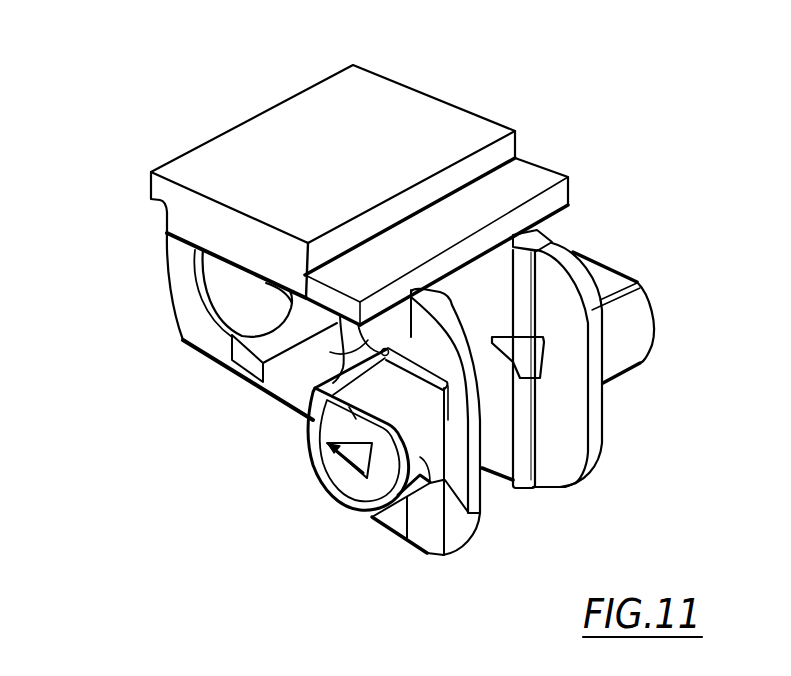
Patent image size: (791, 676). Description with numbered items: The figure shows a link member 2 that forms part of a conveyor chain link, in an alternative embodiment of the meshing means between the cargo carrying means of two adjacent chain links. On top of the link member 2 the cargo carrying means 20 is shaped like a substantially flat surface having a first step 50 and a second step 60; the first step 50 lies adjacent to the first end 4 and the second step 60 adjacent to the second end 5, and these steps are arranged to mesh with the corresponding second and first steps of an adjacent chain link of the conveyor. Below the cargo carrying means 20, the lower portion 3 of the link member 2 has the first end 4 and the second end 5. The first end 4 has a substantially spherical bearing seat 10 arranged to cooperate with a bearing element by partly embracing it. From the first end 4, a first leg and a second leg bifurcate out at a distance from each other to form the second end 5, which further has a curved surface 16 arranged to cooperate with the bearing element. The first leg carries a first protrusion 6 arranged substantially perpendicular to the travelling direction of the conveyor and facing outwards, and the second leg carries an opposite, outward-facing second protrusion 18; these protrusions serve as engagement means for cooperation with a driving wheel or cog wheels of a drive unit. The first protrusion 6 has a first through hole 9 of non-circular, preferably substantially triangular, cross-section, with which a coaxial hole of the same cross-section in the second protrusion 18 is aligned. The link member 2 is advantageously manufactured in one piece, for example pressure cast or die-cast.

The link member 2 is at (234, 93).
The cargo carrying means 20 is at (397, 125).
The second step 60 is at (522, 183).
The first step 50 is at (156, 206).
The spherical bearing seat 10 is at (232, 287).
The first end 4 is at (173, 327).
The curved surface 16 is at (330, 352).
The lower portion 3 is at (300, 392).
The first through hole 9 is at (318, 470).
The first protrusion 6 is at (407, 498).
The second end 5 is at (482, 503).
The second protrusion 18 is at (619, 350).